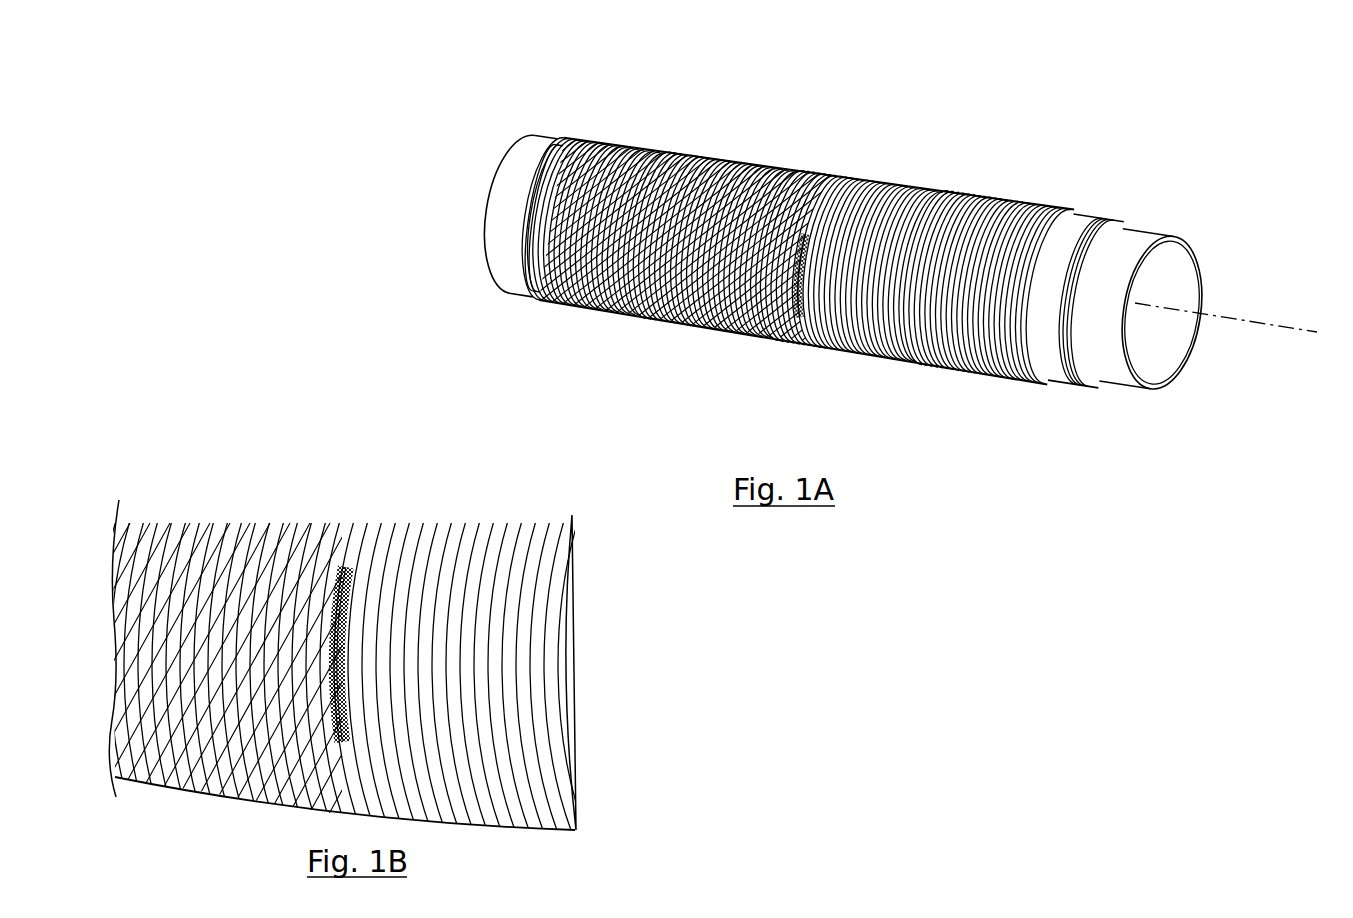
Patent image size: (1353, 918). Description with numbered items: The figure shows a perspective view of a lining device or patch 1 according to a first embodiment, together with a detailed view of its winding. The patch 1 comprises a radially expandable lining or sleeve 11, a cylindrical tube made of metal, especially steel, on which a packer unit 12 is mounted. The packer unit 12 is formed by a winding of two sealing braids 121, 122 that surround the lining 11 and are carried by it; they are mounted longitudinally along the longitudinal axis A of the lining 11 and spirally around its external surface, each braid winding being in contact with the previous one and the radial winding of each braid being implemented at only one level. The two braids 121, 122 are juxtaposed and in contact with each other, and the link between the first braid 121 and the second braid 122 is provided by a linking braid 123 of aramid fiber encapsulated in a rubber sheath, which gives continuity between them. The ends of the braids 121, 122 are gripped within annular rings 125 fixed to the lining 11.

In FIG. 1A, the device or patch 1 is at (1138, 166).
In FIG. 1A, the radially expandable lining or sleeve 11 is at (1143, 238).
In FIG. 1A, the packer unit 12 is at (731, 296).
In FIG. 1A, the first braid 121 is at (650, 322).
In FIG. 1B, the first braid 121 is at (130, 558).
In FIG. 1A, the second braid 122 is at (866, 355).
In FIG. 1B, the second braid 122 is at (555, 690).
In FIG. 1A, the linking braid 123 is at (832, 175).
In FIG. 1B, the linking braid 123 is at (358, 572).
In FIG. 1A, the annular rings 125 is at (596, 142).
In FIG. 1A, the longitudinal axis A is at (1265, 325).